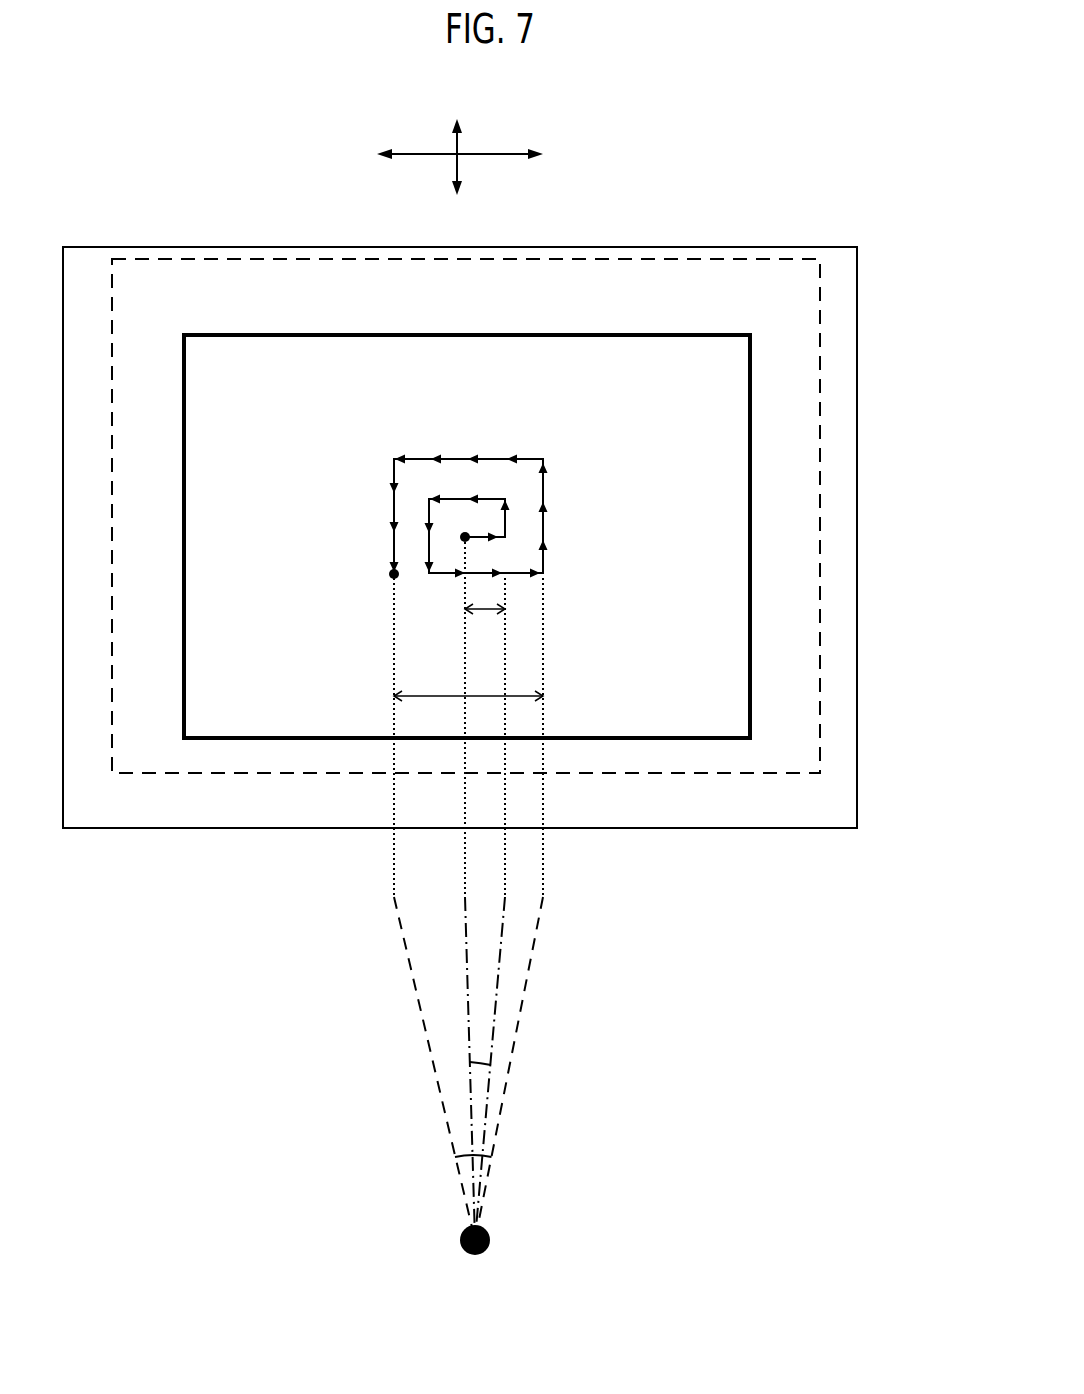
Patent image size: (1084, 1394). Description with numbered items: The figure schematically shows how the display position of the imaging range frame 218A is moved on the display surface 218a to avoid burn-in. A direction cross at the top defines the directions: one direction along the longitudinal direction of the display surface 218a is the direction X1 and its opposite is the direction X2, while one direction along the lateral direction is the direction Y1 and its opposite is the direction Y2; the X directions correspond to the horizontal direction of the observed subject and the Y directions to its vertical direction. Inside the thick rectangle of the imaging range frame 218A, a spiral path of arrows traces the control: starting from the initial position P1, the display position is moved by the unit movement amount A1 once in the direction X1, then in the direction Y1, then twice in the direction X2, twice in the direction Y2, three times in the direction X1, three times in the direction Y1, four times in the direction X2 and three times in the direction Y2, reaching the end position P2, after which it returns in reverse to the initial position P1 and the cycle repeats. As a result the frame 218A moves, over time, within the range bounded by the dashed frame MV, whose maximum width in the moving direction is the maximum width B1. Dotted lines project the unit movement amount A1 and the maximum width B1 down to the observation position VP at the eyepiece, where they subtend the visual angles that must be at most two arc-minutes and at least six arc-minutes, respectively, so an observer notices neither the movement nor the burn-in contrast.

The imaging range frame 218A is at (303, 333).
The display surface 218a is at (707, 247).
The frame MV is at (821, 413).
The initial position P1 is at (465, 537).
The end position P2 is at (394, 573).
The unit movement amount A1 is at (488, 612).
The maximum width B1 is at (520, 695).
The observation position VP is at (490, 1238).
The direction X1 is at (478, 154).
The direction X2 is at (368, 154).
The direction Y1 is at (457, 134).
The direction Y2 is at (457, 210).